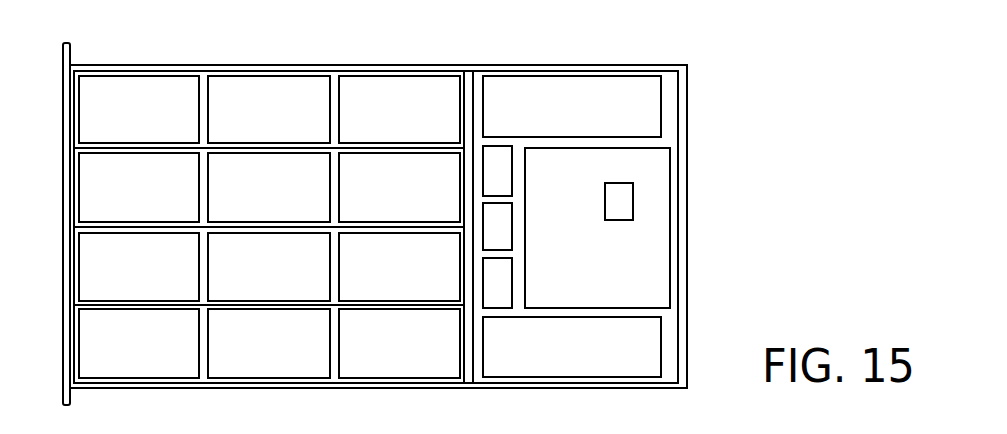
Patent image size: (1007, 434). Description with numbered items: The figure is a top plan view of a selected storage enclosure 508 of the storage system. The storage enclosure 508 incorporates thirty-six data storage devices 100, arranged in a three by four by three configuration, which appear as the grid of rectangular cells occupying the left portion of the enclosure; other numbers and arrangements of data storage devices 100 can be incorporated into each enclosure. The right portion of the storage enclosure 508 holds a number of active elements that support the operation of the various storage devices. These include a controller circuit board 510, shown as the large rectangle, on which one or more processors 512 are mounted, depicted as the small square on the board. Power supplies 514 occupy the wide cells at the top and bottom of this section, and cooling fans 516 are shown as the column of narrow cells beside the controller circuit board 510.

The data storage device 100 is at (272, 88).
The storage enclosure 508 is at (842, 92).
The controller circuit board 510 is at (637, 258).
The processor 512 is at (633, 202).
The power supply 514 is at (592, 88).
The cooling fan 516 is at (493, 162).